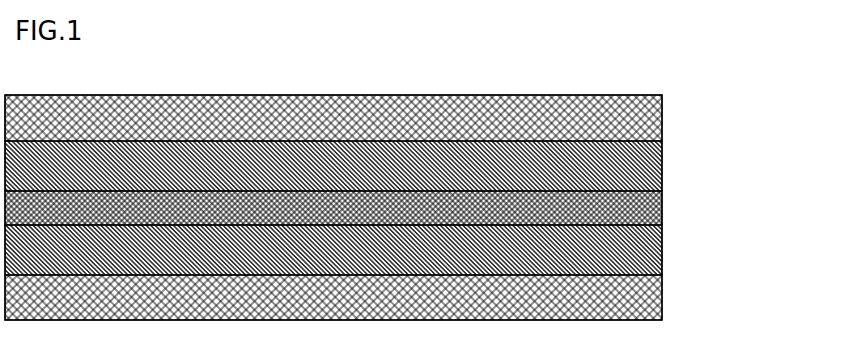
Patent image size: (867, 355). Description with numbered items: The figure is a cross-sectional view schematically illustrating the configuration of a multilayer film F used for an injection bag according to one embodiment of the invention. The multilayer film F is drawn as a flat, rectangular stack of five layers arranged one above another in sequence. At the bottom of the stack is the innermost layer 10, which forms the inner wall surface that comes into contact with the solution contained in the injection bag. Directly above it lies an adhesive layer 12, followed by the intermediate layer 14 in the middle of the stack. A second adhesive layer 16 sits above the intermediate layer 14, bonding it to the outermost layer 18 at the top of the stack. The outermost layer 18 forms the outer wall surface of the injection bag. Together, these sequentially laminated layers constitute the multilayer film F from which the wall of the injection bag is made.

The multilayer film F is at (389, 87).
The innermost layer 10 is at (655, 298).
The adhesive layer 12 is at (668, 252).
The intermediate layer 14 is at (655, 210).
The adhesive layer 16 is at (662, 163).
The outermost layer 18 is at (651, 114).